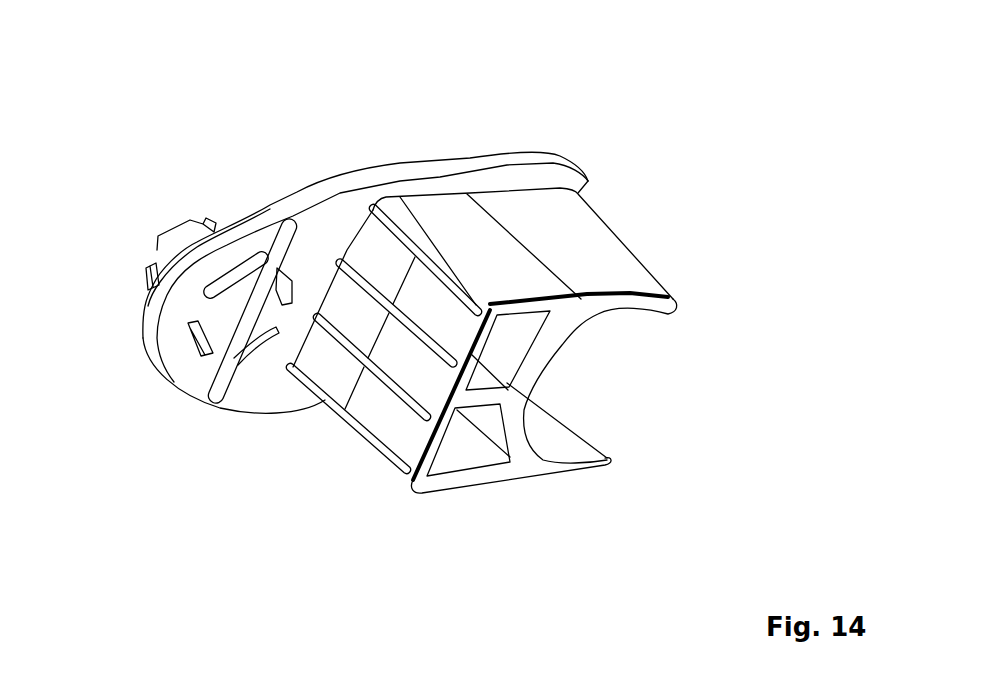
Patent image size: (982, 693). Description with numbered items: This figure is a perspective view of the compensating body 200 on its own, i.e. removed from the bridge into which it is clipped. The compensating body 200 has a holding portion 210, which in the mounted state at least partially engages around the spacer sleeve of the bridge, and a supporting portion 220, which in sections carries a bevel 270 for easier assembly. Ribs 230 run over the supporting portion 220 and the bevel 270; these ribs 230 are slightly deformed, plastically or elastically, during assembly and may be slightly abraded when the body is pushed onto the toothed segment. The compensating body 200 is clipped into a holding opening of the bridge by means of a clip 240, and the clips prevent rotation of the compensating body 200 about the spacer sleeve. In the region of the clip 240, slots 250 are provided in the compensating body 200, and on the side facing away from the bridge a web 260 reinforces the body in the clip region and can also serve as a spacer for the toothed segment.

The compensating body 200 is at (397, 319).
The holding portion 210 is at (610, 273).
The supporting portion 220 is at (463, 450).
The ribs 230 is at (367, 368).
The clip 240 is at (181, 241).
The slots 250 is at (212, 292).
The web 260 is at (216, 378).
The bevel 270 is at (432, 397).